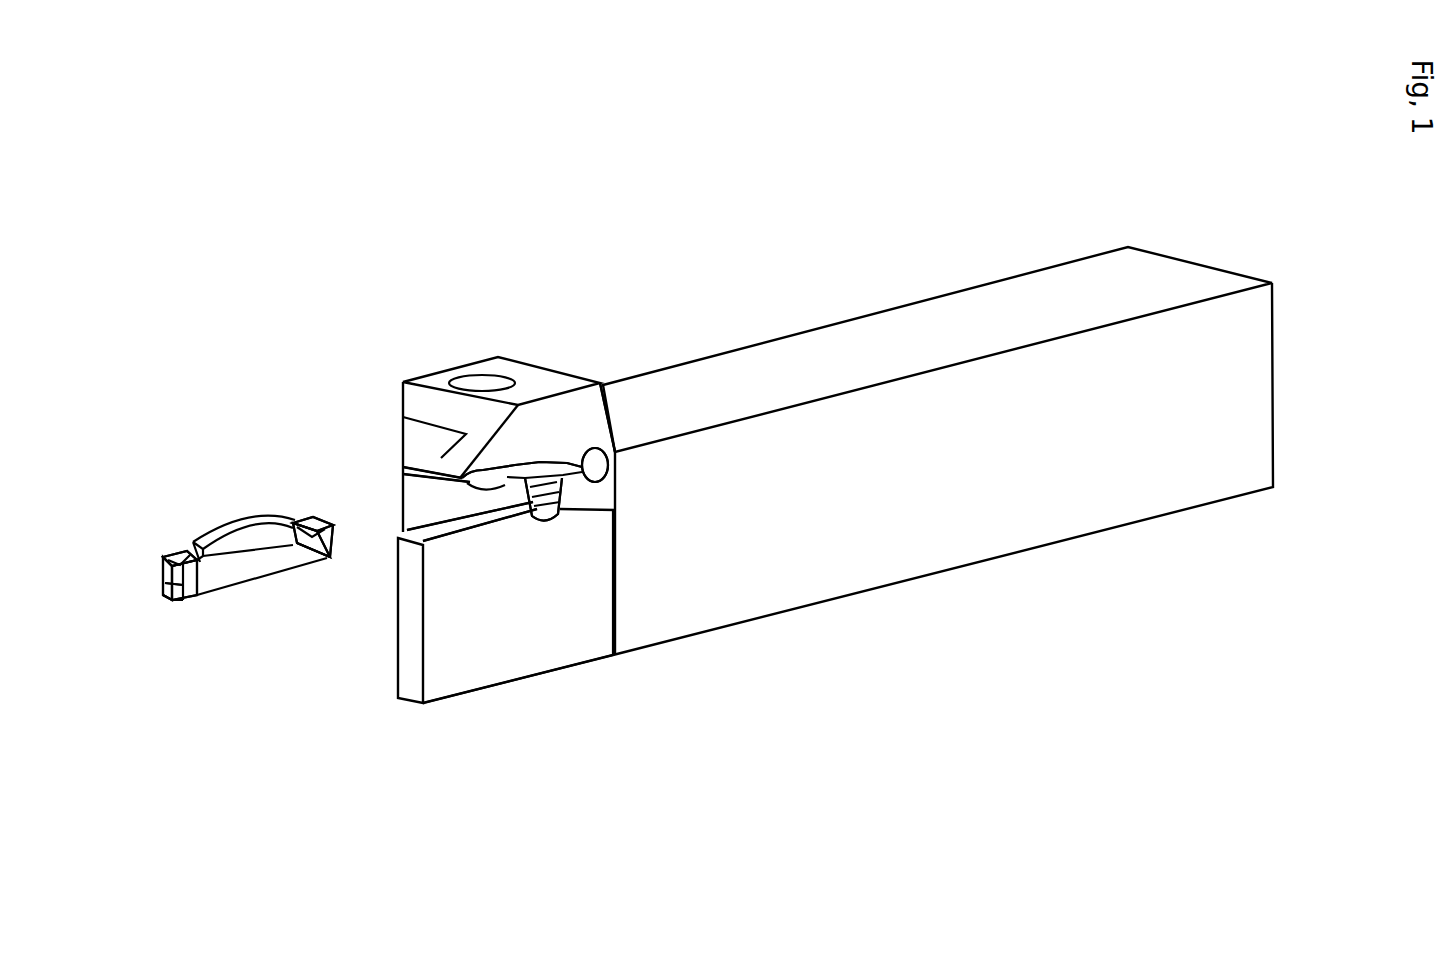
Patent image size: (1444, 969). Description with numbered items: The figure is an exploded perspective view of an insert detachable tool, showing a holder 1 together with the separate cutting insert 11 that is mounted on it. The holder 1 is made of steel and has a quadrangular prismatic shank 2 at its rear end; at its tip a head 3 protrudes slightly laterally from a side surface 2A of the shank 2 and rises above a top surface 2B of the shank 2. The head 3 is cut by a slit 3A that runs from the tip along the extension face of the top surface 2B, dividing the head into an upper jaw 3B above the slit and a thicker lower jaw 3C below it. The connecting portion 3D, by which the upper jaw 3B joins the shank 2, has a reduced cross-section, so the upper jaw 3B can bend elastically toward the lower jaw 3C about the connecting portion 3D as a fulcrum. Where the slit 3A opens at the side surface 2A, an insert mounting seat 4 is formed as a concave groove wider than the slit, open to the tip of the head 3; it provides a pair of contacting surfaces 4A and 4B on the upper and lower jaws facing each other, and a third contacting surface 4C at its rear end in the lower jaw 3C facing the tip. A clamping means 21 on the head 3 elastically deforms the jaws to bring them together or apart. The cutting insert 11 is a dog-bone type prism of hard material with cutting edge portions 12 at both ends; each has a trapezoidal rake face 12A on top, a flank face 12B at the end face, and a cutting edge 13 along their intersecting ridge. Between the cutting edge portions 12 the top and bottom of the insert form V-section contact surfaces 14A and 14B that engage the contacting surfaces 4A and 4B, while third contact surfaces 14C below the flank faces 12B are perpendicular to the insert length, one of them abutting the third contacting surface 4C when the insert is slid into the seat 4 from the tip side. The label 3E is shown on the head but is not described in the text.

The holder 1 is at (540, 212).
The shank 2 is at (692, 312).
The side surface 2A is at (850, 552).
The top surface 2B is at (920, 325).
The head 3 is at (520, 318).
The slit 3A is at (405, 471).
The upper jaw 3B is at (456, 460).
The lower jaw 3C is at (475, 672).
The connecting portion 3D is at (612, 433).
The top surface of head 3E is at (562, 378).
The insert mounting seat 4 is at (530, 538).
The contacting surface 4A is at (487, 472).
The contacting surface 4B is at (457, 540).
The third contacting surface 4C is at (613, 511).
The cutting insert 11 is at (232, 496).
The cutting edge portion 12 is at (158, 545).
The rake face 12A is at (178, 558).
The flank face 12B is at (165, 583).
The cutting edge 13 is at (163, 568).
The contact surface 14A is at (237, 530).
The contact surface 14B is at (173, 610).
The third contact surface 14C is at (170, 598).
The clamping means 21 is at (487, 382).